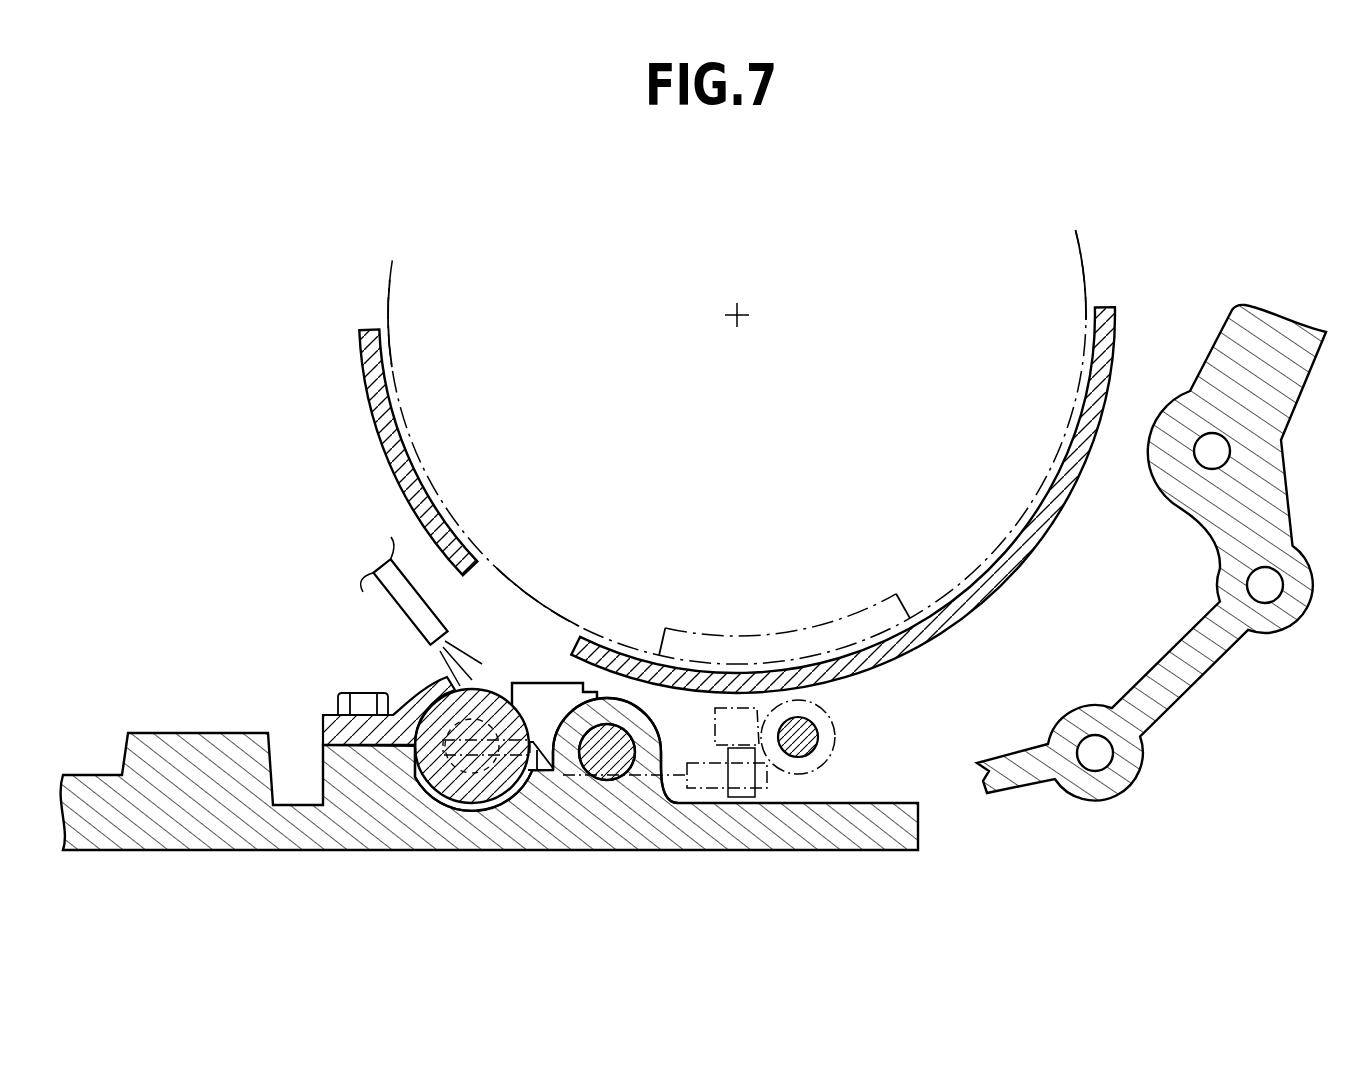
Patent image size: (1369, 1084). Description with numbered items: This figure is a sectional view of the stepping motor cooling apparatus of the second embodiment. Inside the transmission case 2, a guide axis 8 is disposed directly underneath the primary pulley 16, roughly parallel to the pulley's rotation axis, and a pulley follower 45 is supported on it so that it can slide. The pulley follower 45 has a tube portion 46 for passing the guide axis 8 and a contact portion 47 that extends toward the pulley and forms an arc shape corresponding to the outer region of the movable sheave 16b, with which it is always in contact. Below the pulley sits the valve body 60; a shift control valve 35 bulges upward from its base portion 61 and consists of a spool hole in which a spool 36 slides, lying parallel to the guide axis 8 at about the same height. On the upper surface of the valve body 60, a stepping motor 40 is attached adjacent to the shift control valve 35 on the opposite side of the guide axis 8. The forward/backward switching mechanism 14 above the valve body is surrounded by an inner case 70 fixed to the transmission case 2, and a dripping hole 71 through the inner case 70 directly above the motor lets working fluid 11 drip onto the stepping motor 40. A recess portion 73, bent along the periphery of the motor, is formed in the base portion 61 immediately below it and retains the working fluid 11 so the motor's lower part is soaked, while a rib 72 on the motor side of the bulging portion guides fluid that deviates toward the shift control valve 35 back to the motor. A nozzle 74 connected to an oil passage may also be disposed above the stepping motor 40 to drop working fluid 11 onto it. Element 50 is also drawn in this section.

The transmission case 2 is at (1205, 672).
The guide axis 8 is at (818, 737).
The working fluid 11 is at (368, 555).
The forward/backward switching mechanism 14 is at (1050, 231).
The primary pulley 16 is at (1088, 267).
The movable sheave 16b is at (912, 592).
The shift control valve 35 is at (583, 797).
The spool 36 is at (615, 752).
The stepping motor 40 is at (498, 675).
The pulley follower 45 is at (727, 628).
The tube portion 46 is at (835, 768).
The contact portion 47 is at (785, 626).
The spacer 50 is at (540, 762).
The valve body 60 is at (173, 728).
The base portion 61 is at (300, 800).
The inner case 70 is at (1025, 572).
The dripping hole 71 is at (497, 568).
The rib 72 is at (553, 692).
The recess portion 73 is at (450, 812).
The nozzle 74 is at (384, 586).